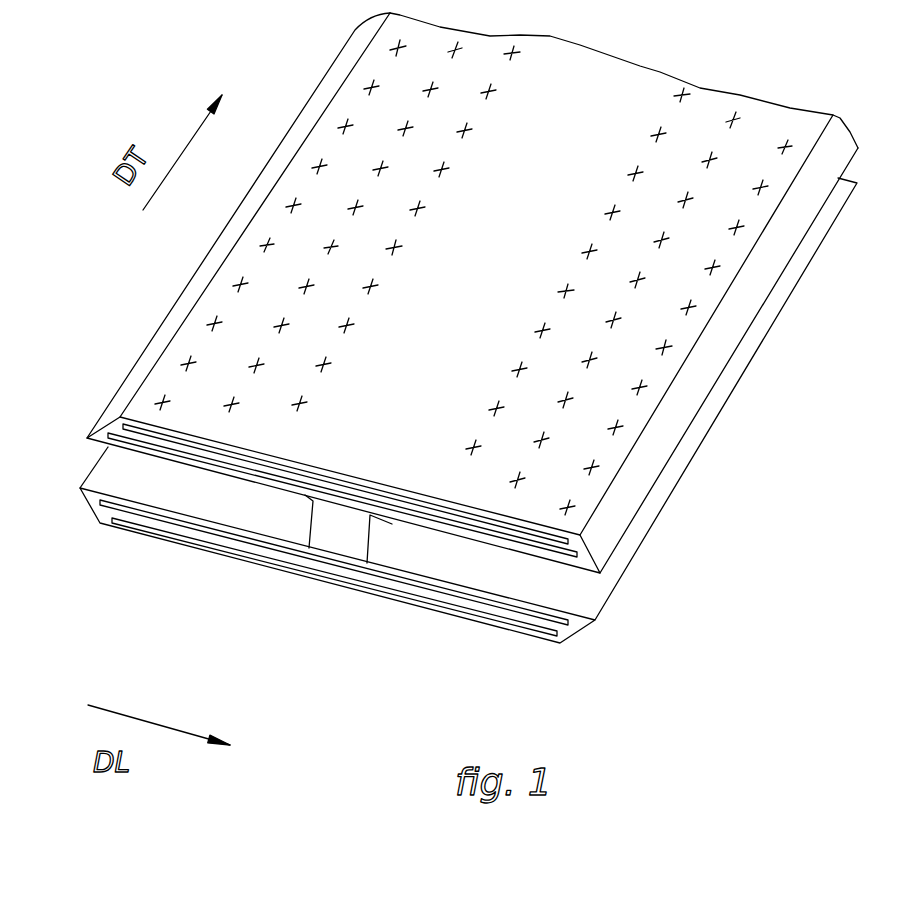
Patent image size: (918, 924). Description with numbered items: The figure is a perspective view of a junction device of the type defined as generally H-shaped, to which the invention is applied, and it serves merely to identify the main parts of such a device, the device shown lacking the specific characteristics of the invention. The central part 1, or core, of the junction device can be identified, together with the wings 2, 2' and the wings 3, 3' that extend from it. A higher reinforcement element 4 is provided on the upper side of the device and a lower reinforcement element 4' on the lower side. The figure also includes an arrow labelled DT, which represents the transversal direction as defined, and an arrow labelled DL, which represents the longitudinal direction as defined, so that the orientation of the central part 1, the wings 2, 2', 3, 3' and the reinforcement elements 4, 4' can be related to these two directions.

The central part 1 is at (348, 538).
The wing 2 is at (472, 293).
The wing 2' is at (468, 441).
The wing 3 is at (417, 277).
The wing 3' is at (62, 521).
The higher reinforcement element 4 is at (342, 464).
The lower reinforcement element 4' is at (334, 588).